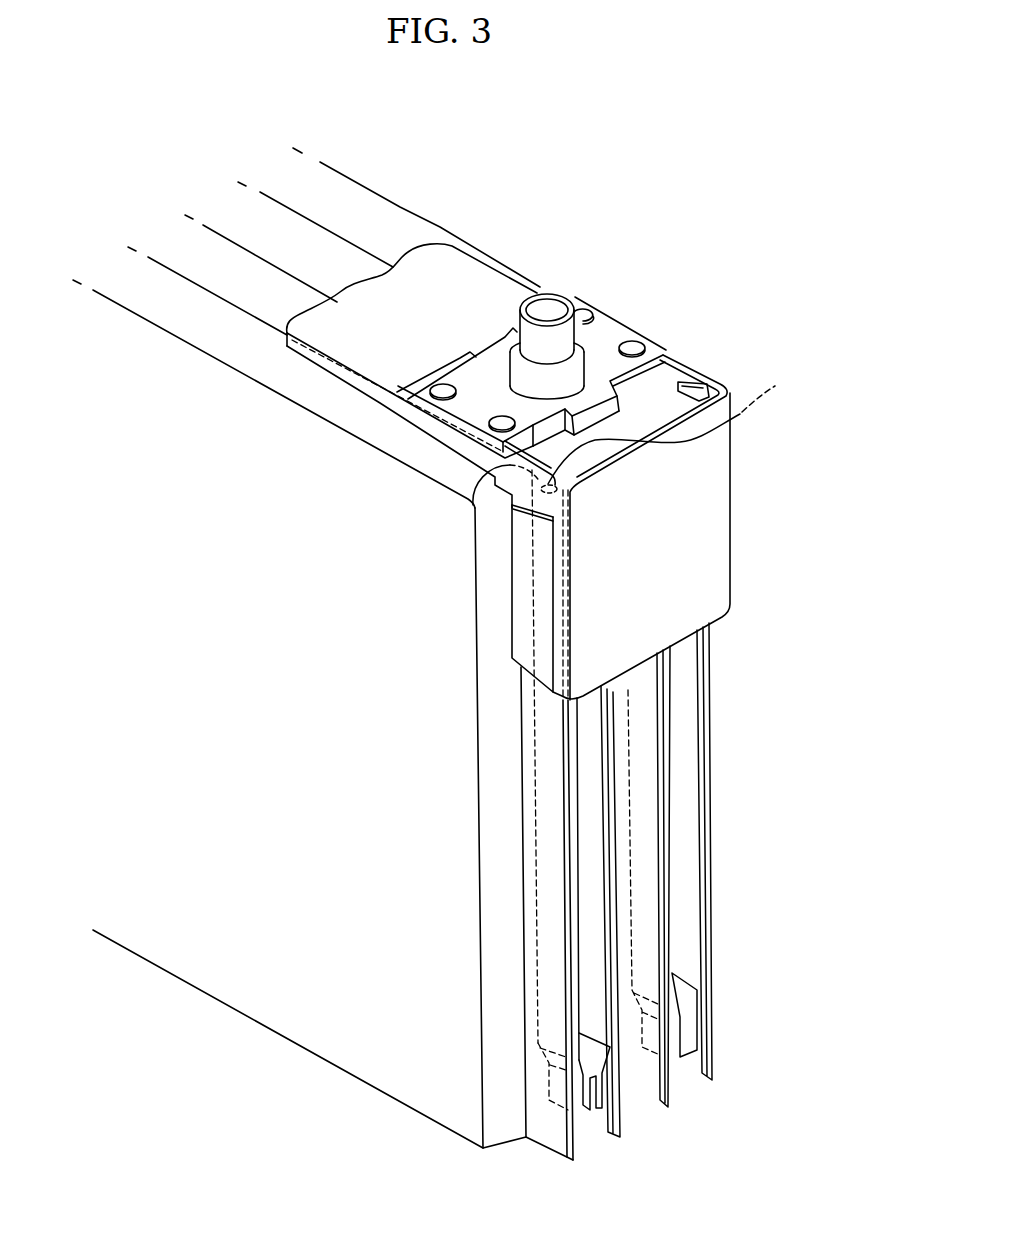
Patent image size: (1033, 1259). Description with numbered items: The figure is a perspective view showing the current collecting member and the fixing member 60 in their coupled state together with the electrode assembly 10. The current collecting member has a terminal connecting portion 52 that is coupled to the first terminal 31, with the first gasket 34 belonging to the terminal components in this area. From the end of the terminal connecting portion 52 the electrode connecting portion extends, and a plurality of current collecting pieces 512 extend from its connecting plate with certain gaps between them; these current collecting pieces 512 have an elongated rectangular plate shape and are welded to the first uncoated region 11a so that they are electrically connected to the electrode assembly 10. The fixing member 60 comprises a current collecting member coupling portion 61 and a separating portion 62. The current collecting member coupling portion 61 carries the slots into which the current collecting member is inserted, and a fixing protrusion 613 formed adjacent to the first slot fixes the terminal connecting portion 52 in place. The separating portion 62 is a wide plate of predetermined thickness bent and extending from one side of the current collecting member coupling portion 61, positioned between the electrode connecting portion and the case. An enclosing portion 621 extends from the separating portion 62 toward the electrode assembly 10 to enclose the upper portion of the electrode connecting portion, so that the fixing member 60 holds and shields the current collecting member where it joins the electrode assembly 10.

The electrode assembly 10 is at (383, 192).
The current collecting member coupling portion 61 is at (470, 275).
The first terminal 31 is at (548, 300).
The first gasket 34 is at (583, 370).
The terminal connecting portion 52 is at (658, 408).
The fixing protrusion 613 is at (728, 379).
The fixing member 60 is at (736, 451).
The separating portion 62 is at (702, 536).
The enclosing portion 621 is at (523, 612).
The current collecting pieces 512 is at (592, 905).
The first uncoated region 11a is at (667, 1092).